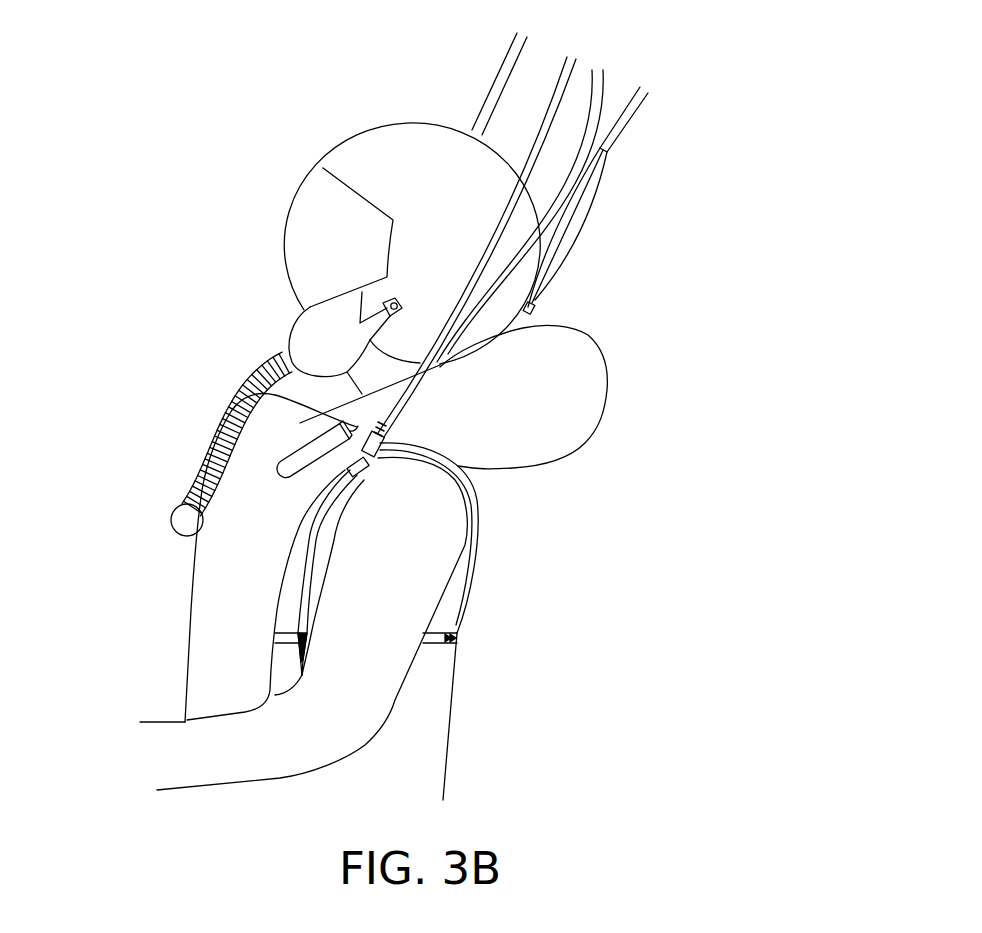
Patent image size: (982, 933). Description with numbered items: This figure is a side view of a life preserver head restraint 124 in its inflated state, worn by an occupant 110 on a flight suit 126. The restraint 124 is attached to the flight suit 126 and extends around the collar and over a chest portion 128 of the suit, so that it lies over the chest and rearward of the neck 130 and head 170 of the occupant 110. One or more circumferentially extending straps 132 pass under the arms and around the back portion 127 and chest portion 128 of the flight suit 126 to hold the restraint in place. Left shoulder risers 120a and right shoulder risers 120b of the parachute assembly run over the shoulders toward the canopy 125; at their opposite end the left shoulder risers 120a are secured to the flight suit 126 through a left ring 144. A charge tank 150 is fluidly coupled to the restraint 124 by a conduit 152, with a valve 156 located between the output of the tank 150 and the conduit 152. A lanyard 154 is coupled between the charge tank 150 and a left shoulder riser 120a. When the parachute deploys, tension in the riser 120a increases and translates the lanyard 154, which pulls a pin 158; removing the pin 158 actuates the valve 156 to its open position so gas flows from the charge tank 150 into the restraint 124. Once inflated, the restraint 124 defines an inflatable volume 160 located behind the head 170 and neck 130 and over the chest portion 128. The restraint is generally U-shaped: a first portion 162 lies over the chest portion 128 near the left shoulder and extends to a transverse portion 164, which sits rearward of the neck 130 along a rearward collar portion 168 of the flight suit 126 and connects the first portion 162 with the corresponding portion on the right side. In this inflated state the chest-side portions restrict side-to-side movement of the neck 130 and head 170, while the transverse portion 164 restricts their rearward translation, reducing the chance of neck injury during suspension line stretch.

The occupant 110 is at (268, 198).
The head 170 is at (425, 143).
The left shoulder riser 120a is at (588, 90).
The right shoulder riser 120b is at (500, 80).
The neck 130 is at (385, 377).
The conduit 152 is at (253, 390).
The charge tank 150 is at (290, 465).
The lanyard 154 is at (577, 230).
The pin 158 is at (540, 307).
The valve 156 is at (353, 480).
The left ring 144 is at (385, 468).
The inflatable volume 160 is at (486, 421).
The transverse portion 164 is at (570, 417).
The rearward collar portion 168 is at (484, 473).
The life preserver head restraint 124 is at (198, 583).
The canopy 125 is at (389, 636).
The flight suit 126 is at (427, 739).
The back portion 127 is at (468, 670).
The chest portion 128 is at (268, 603).
The strap 132 is at (448, 638).
The first portion 162 is at (220, 655).